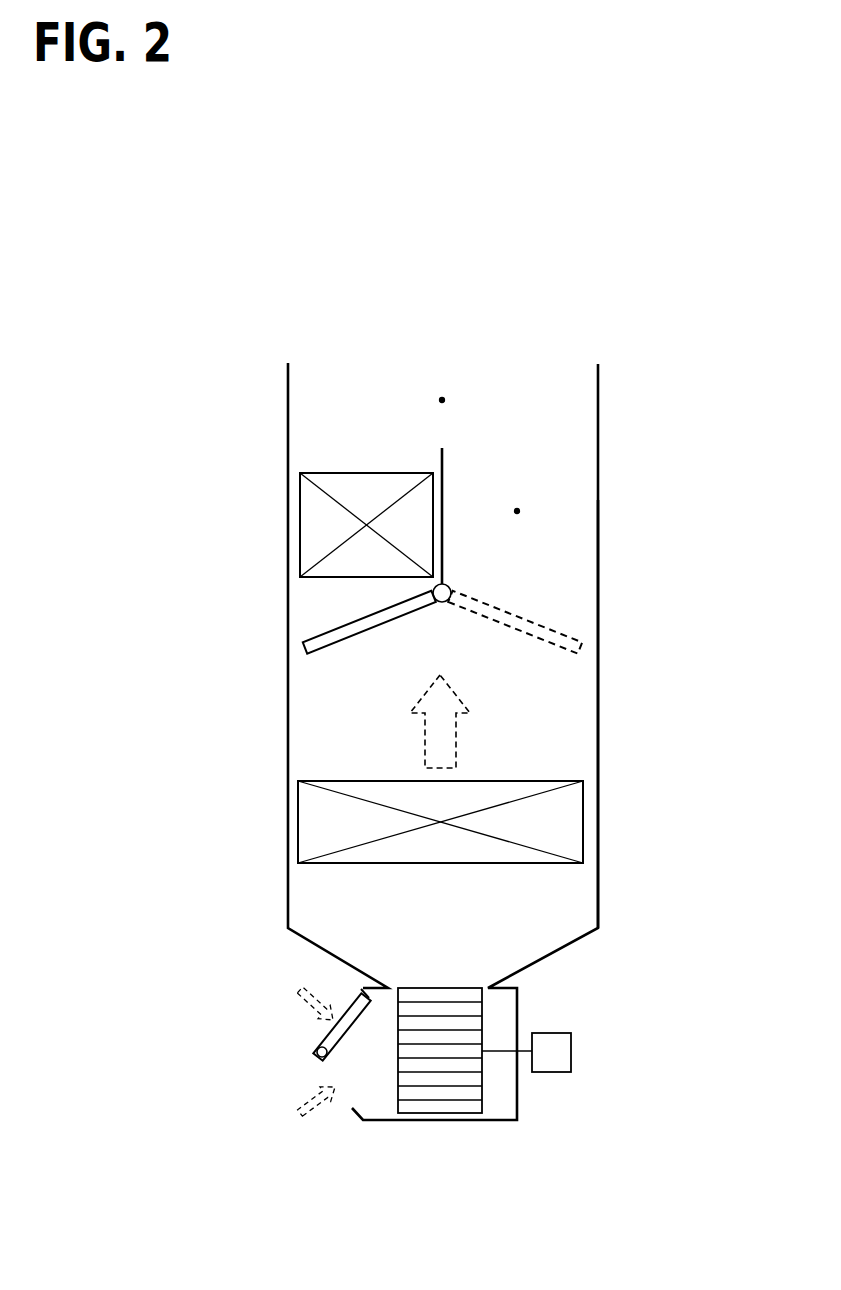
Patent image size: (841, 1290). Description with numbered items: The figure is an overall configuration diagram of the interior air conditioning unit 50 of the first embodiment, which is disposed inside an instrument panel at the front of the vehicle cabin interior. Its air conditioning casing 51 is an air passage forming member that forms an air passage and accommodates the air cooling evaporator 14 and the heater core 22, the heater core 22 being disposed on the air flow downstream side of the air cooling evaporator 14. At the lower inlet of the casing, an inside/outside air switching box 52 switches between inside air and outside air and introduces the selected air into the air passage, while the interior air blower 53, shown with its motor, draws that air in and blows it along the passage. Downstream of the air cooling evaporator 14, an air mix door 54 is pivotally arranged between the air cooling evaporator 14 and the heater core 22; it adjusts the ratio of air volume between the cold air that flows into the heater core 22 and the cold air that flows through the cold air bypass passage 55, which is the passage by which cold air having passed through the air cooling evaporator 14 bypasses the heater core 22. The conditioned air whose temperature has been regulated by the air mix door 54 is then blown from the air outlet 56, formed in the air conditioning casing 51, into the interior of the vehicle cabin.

The air cooling evaporator 14 is at (583, 820).
The heater core 22 is at (331, 472).
The interior air conditioning unit 50 is at (618, 411).
The air conditioning casing 51 is at (598, 750).
The inside/outside air switching box 52 is at (313, 1050).
The interior air blower 53 is at (551, 1072).
The air mix door 54 is at (377, 622).
The cold air bypass passage 55 is at (517, 511).
The air outlet 56 is at (442, 400).